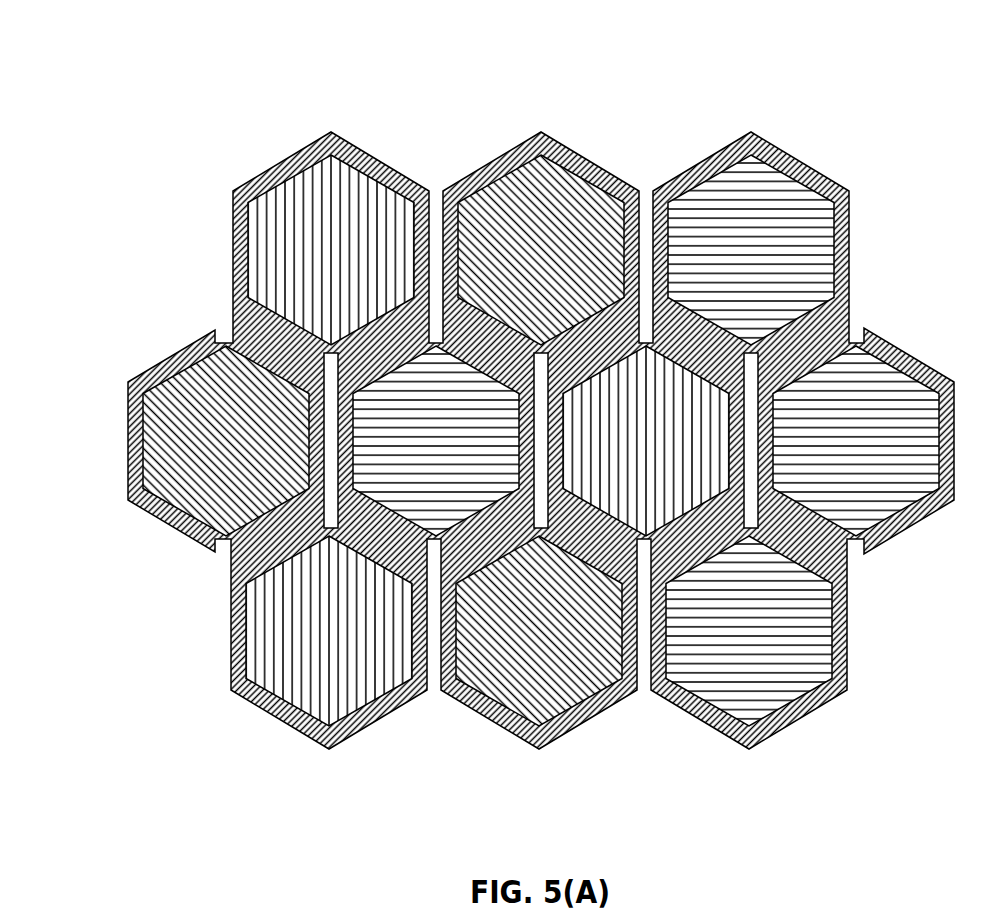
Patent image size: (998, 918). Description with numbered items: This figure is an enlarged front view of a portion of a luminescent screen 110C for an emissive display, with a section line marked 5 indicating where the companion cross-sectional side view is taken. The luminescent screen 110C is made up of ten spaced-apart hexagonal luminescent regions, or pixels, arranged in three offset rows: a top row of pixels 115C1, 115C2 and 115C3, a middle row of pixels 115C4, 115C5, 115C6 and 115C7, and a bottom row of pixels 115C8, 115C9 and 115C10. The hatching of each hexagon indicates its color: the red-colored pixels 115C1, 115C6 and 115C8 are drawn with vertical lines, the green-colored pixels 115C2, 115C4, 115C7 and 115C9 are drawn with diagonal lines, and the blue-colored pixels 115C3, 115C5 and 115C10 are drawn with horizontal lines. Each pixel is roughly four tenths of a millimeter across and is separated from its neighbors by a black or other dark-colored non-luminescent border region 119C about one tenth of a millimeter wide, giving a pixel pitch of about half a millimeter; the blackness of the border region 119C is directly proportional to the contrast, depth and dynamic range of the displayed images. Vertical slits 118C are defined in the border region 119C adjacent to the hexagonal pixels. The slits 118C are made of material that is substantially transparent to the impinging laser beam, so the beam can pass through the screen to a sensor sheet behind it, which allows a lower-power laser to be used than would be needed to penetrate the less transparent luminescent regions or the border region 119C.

The luminescent screen 110C is at (537, 390).
The vertical slits 118C is at (436, 215).
The non-luminescent border region 119C is at (212, 500).
The hexagonal luminescent region 115C1 is at (297, 244).
The hexagonal luminescent region 115C2 is at (477, 260).
The hexagonal luminescent region 115C3 is at (718, 249).
The hexagonal luminescent region 115C4 is at (182, 451).
The hexagonal luminescent region 115C5 is at (402, 448).
The hexagonal luminescent region 115C6 is at (648, 450).
The hexagonal luminescent region 115C7 is at (822, 445).
The hexagonal luminescent region 115C8 is at (293, 621).
The hexagonal luminescent region 115C9 is at (505, 624).
The hexagonal luminescent region 115C10 is at (732, 640).
The section line 5- 5 is at (640, 530).